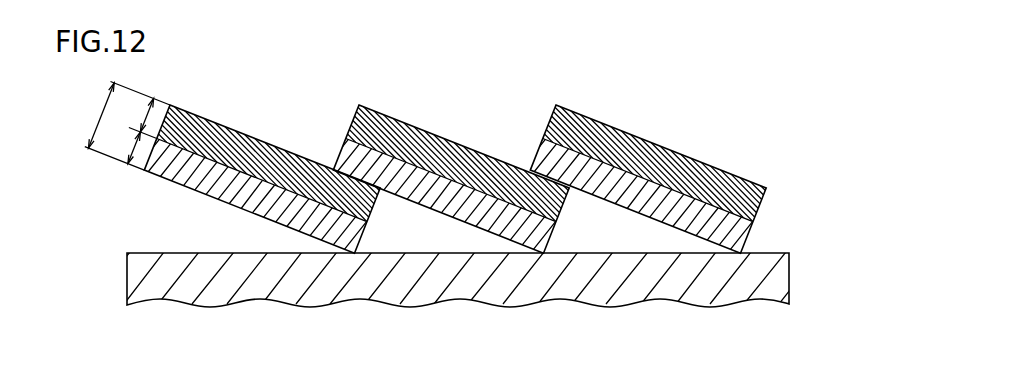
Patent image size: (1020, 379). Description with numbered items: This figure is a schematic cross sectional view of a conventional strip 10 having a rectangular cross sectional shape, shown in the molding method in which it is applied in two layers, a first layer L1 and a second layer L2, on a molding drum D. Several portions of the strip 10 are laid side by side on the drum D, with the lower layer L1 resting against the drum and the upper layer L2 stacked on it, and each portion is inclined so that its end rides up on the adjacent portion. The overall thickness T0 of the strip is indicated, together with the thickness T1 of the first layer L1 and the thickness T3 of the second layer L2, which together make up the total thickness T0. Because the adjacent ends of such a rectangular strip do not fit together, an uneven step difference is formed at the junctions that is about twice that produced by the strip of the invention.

The strip 10 is at (436, 131).
The first layer of strip L1 is at (444, 194).
The second layer of strip L2 is at (459, 163).
The thickness of strip T0 is at (121, 126).
The thickness of first layer T1 is at (123, 148).
The thickness of second layer T3 is at (138, 119).
The molding drum D is at (504, 283).